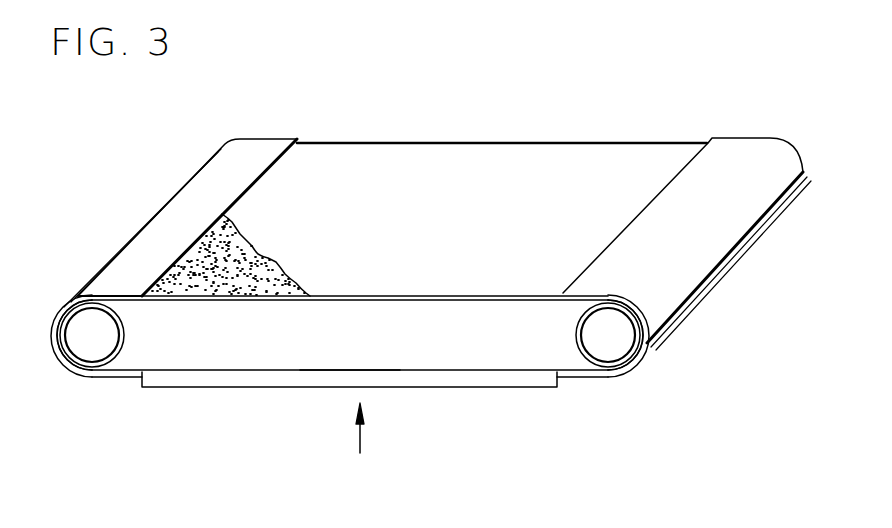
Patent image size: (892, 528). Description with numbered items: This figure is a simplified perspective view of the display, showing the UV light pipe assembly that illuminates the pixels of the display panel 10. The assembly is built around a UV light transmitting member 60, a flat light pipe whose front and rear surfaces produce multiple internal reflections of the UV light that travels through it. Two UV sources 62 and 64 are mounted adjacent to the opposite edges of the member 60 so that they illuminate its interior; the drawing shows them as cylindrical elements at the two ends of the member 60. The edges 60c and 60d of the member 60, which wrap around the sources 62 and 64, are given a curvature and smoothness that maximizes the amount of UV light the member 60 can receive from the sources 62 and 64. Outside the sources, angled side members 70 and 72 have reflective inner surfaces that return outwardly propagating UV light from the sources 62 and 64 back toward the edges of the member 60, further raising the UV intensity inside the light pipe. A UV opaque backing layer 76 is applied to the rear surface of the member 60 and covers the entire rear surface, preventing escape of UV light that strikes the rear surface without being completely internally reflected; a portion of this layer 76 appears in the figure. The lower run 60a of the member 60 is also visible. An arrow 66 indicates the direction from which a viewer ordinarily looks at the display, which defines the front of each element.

The display panel 10 is at (510, 383).
The UV light transmitting member 60 is at (443, 356).
The lower belt run 60a is at (328, 368).
The edge of UV light transmitting member 60c is at (126, 338).
The edge of UV light transmitting member 60d is at (577, 337).
The UV source 62 is at (93, 343).
The UV source 64 is at (612, 340).
The arrow 66 is at (358, 430).
The side member 70 is at (187, 207).
The side member 72 is at (673, 252).
The UV opaque backing layer 76 is at (263, 280).